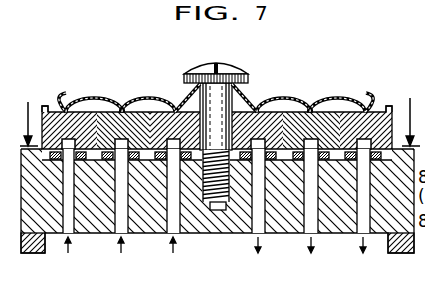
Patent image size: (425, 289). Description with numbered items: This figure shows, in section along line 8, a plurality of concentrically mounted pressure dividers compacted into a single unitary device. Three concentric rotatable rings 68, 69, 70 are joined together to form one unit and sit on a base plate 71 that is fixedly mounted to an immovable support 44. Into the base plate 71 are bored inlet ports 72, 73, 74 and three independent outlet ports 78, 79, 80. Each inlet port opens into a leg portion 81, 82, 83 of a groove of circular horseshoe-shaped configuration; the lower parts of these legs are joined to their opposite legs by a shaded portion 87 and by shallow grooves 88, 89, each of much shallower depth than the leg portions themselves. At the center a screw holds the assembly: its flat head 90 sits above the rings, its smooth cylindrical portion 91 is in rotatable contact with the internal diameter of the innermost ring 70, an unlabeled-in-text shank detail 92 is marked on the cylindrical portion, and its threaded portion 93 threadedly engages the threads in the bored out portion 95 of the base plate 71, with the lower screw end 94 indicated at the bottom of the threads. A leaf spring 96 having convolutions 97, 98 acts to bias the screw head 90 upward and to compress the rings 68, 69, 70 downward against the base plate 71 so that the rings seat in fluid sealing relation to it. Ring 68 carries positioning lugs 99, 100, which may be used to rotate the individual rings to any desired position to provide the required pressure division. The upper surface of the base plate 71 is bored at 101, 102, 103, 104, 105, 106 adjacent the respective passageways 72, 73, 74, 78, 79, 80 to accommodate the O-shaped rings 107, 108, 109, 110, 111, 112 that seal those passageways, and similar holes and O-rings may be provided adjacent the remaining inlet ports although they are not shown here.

The section line 8- 8 is at (220, 109).
The immovable support 44 is at (27, 254).
The rotatable ring 68 is at (60, 95).
The rotatable ring 69 is at (125, 108).
The rotatable ring 70 is at (176, 104).
The base plate 71 is at (217, 209).
The inlet port 72 is at (63, 213).
The inlet port 73 is at (115, 213).
The inlet port 74 is at (167, 213).
The outlet port 78 is at (265, 213).
The outlet port 79 is at (318, 213).
The outlet port 80 is at (370, 213).
The leg portion 81 is at (94, 81).
The leg portion 82 is at (101, 99).
The leg portion 83 is at (152, 99).
The shaded portion 87 is at (293, 75).
The shallow groove 88 is at (311, 109).
The shallow groove 89 is at (363, 101).
The flat head 90 is at (224, 64).
The smooth cylindrical portion 91 is at (232, 116).
The screw shank sleeve 92 is at (234, 133).
The threaded portion 93 is at (205, 168).
The screw tip 94 is at (230, 232).
The bored out portion 95 is at (218, 209).
The leaf spring 96 is at (248, 99).
The convolution 97 is at (341, 99).
The convolution 98 is at (302, 103).
The positioning lug 99 is at (389, 106).
The positioning lug 100 is at (49, 107).
The bore 101 is at (42, 191).
The bore 102 is at (94, 196).
The bore 103 is at (147, 196).
The bore 104 is at (284, 196).
The bore 105 is at (337, 196).
The bore 106 is at (392, 191).
The O-shaped ring 107 is at (53, 159).
The O-shaped ring 108 is at (79, 159).
The O-shaped ring 109 is at (132, 159).
The O-shaped ring 110 is at (270, 159).
The O-shaped ring 111 is at (323, 159).
The O-shaped ring 112 is at (375, 159).